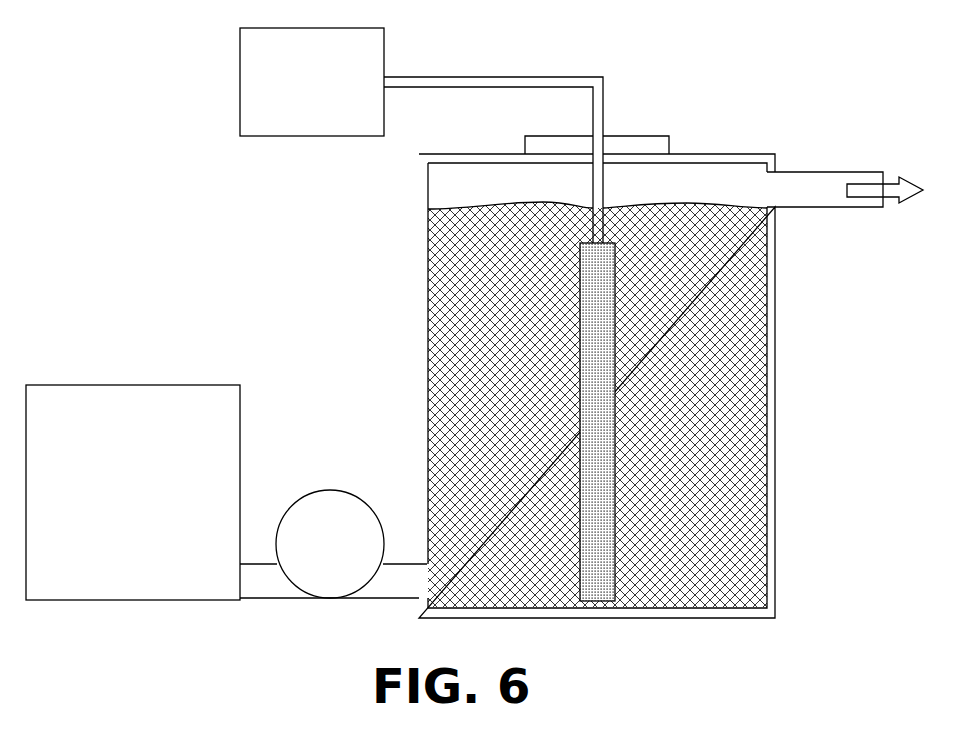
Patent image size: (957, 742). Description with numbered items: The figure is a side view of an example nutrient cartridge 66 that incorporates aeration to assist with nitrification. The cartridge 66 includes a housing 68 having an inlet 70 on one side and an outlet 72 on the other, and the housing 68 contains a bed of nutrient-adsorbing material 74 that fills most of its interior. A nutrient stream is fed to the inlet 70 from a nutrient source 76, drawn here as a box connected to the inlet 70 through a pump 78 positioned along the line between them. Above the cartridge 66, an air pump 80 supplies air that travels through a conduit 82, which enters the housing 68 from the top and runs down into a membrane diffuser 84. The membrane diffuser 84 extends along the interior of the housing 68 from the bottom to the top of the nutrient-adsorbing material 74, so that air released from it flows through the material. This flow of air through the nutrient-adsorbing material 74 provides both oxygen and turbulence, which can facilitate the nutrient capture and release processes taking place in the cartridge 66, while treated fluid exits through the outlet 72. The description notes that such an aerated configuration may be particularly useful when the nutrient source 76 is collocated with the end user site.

The nutrient cartridge 66 is at (779, 94).
The housing 68 is at (776, 390).
The inlet 70 is at (397, 562).
The outlet 72 is at (818, 172).
The nutrient-adsorbing material 74 is at (745, 481).
The nutrient source 76 is at (133, 492).
The pump 78 is at (330, 544).
The air pump 80 is at (312, 82).
The conduit 82 is at (603, 183).
The membrane diffuser 84 is at (615, 391).